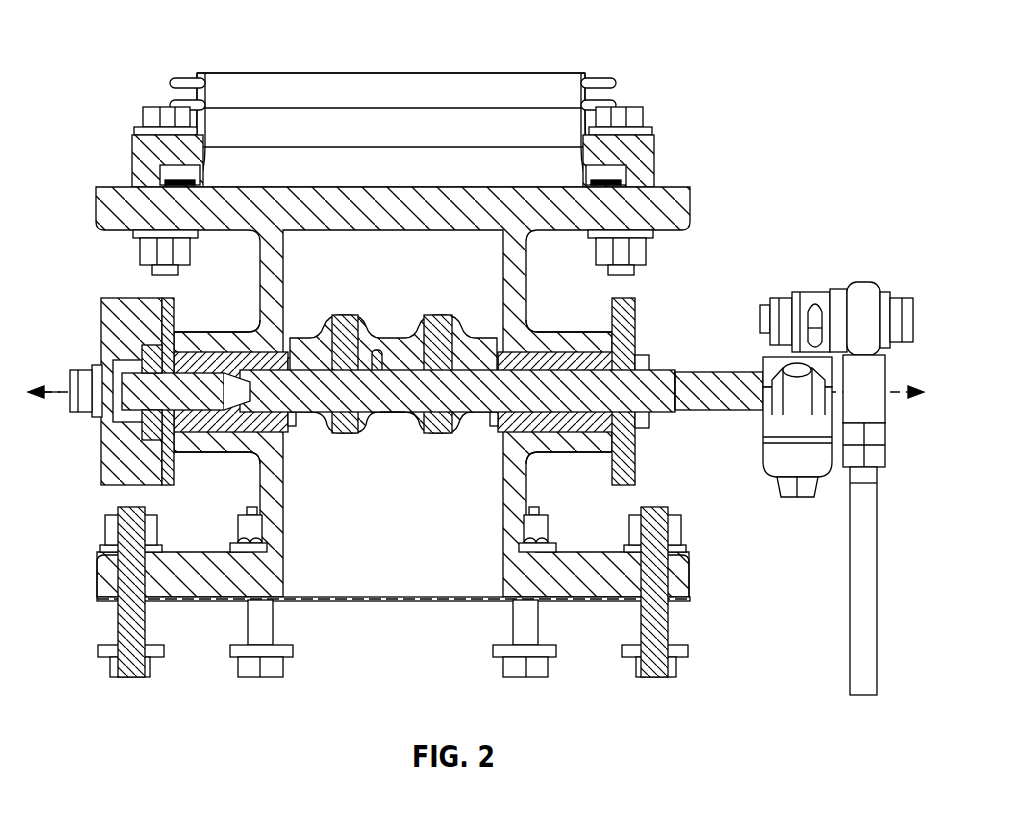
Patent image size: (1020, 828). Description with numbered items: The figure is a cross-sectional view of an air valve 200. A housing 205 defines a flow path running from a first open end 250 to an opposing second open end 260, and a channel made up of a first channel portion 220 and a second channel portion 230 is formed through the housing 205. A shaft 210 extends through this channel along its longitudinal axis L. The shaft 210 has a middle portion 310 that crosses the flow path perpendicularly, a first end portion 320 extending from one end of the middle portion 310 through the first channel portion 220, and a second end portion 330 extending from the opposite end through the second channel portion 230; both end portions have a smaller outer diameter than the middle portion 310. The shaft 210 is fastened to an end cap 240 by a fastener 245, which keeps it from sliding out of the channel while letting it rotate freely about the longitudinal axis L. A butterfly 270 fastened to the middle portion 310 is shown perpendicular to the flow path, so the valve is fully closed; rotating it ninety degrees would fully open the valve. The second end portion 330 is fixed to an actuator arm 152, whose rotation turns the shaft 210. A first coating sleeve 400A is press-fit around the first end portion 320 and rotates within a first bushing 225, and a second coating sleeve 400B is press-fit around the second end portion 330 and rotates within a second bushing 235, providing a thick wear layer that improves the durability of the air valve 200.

The air valve 200 is at (189, 42).
The second open end 260 is at (392, 228).
The housing 205 is at (118, 195).
The first channel portion 220 is at (236, 336).
The first bushing 225 is at (216, 350).
The first coating sleeve 400A is at (264, 352).
The butterfly 270 is at (393, 346).
The second channel portion 230 is at (567, 340).
The second bushing 235 is at (576, 356).
The second coating sleeve 400B is at (608, 348).
The shaft 210 is at (727, 368).
The actuator arm 152 is at (817, 306).
The end cap 240 is at (116, 332).
The fastener 245 is at (140, 410).
The first end portion 320 is at (253, 436).
The middle portion 310 is at (399, 418).
The second end portion 330 is at (681, 404).
The first open end 250 is at (376, 573).
The longitudinal axis L is at (52, 396).